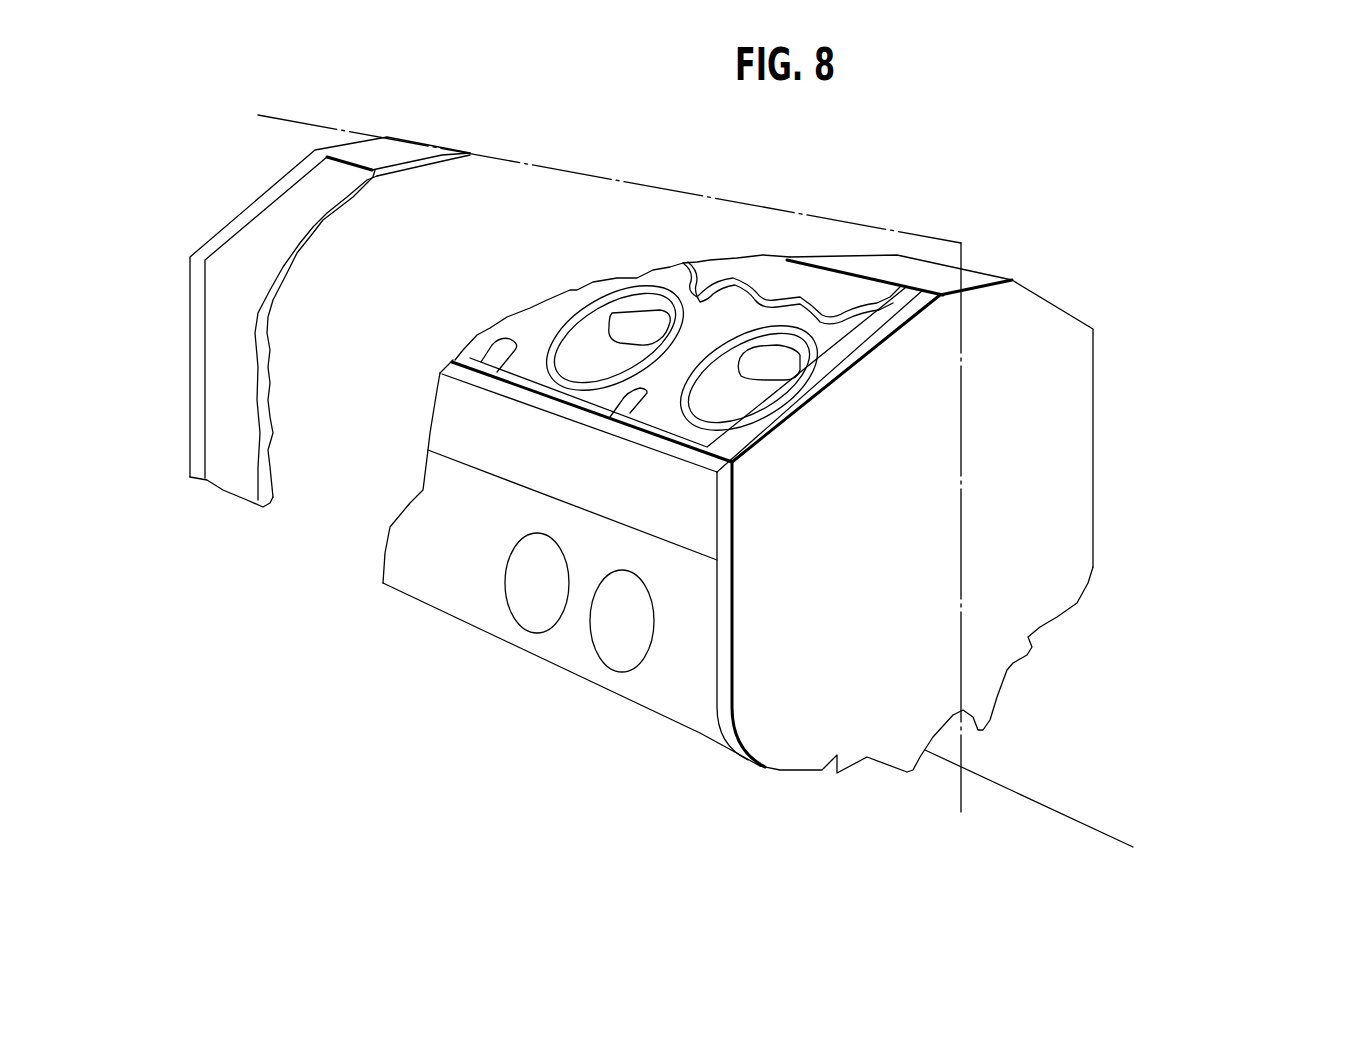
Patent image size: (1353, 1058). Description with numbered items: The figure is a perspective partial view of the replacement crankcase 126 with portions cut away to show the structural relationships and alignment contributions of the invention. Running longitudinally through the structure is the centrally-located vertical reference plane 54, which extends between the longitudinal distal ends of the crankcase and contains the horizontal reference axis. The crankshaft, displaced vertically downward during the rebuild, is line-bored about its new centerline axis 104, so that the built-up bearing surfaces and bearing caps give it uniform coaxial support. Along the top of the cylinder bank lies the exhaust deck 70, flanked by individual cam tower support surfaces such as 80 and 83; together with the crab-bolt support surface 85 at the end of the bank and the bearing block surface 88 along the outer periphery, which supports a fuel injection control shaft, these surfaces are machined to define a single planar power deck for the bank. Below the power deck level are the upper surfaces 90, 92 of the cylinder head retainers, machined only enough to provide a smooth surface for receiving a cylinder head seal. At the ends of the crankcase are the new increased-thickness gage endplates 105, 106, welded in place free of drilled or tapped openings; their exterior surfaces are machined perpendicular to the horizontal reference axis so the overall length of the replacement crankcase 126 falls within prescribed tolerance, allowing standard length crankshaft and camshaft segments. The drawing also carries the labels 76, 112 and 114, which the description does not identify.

The vertical reference plane 54 is at (878, 226).
The exhaust deck 70 is at (795, 256).
The crankcase bottom profile 76 is at (889, 771).
The cam tower support surface 80 is at (800, 294).
The cam tower support surface 83 is at (698, 278).
The crab-bolt support surface 85 is at (775, 398).
The bearing block surface 88 is at (617, 410).
The upper surface of cylinder head retainer 90 is at (685, 418).
The upper surface of cylinder head retainer 92 is at (558, 375).
The new crankshaft centerline axis 104 is at (1103, 832).
The new endplate 105 is at (722, 577).
The new endplate 106 is at (208, 243).
The crankcase side face 112 is at (1042, 460).
The rail strip bead 114 is at (172, 357).
The replacement crankcase 126 is at (538, 689).